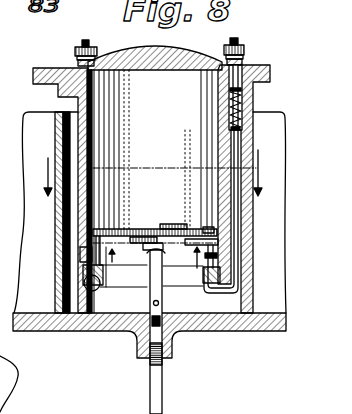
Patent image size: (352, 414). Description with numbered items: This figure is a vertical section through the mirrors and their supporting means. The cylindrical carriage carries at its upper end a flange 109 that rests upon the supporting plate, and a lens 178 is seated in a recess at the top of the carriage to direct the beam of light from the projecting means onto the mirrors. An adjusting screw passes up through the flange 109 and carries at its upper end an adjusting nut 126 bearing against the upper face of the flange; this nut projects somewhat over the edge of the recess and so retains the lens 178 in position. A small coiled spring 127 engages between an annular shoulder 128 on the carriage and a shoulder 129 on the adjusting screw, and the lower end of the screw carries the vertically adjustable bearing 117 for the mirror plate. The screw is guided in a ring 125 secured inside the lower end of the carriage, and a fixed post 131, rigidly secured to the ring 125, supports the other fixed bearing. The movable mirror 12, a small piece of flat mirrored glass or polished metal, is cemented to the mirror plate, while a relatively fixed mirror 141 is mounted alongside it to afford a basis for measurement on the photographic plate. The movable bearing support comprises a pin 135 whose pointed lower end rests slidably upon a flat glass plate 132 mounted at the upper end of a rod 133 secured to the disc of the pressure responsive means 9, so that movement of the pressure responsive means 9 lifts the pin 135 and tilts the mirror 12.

The lens 178 is at (117, 58).
The adjusting nut 126 is at (242, 45).
The flange 109 is at (240, 66).
The annular shoulder 128 is at (236, 80).
The coiled spring 127 is at (242, 99).
The shoulder 129 is at (237, 124).
The fixed mirror 141 is at (164, 225).
The mirror 12 is at (146, 230).
The pin 135 is at (189, 229).
The bearing 117 is at (218, 245).
The fixed post 131 is at (92, 258).
The ring 125 is at (97, 288).
The flat glass plate 132 is at (178, 330).
The rod 133 is at (151, 291).
The pressure responsive means 9 is at (151, 184).